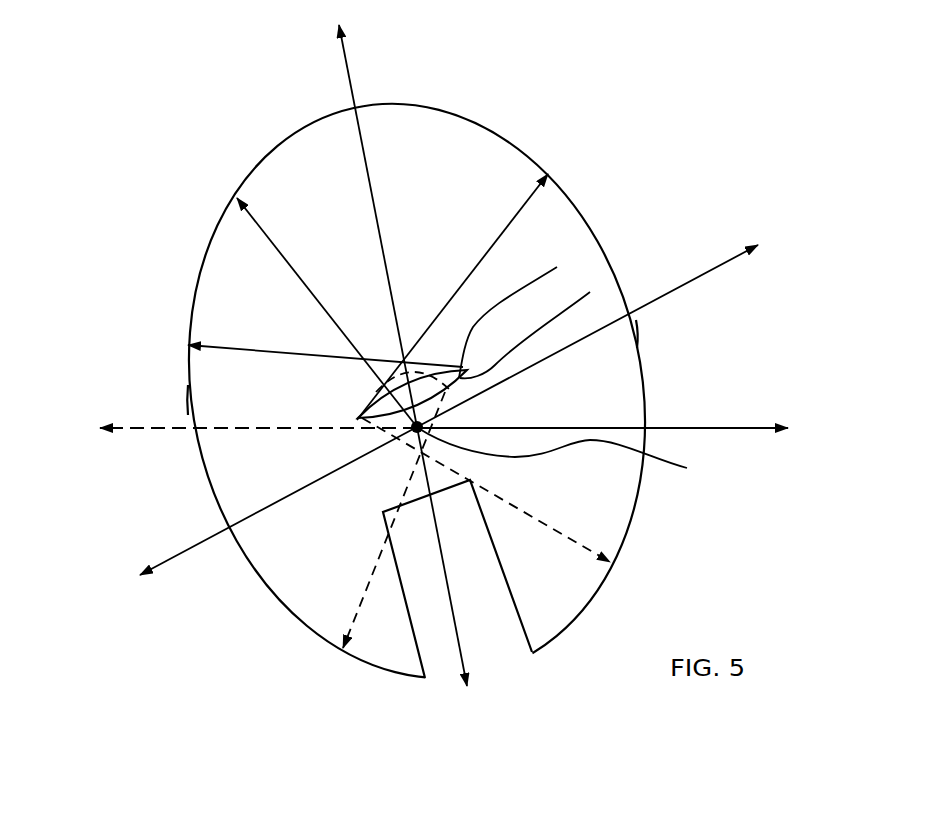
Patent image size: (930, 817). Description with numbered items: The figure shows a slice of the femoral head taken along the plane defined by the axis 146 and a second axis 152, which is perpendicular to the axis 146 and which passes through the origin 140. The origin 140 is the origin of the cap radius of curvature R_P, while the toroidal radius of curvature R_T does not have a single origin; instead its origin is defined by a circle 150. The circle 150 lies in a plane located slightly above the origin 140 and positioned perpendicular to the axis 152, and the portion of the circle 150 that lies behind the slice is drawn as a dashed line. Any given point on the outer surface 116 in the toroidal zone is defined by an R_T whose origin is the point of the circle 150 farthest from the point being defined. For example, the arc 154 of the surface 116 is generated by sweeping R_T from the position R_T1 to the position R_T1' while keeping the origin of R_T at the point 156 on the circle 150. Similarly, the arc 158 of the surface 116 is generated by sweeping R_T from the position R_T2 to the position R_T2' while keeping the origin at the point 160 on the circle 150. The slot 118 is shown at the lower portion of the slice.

The outer surface 116 is at (287, 137).
The slot 118 is at (424, 676).
The origin 140 is at (687, 468).
The axis 146 is at (468, 683).
The circle 150 is at (590, 292).
The axis 152 is at (747, 250).
The arc 154 is at (190, 398).
The point 156 is at (557, 267).
The arc 158 is at (633, 333).
The point 160 is at (358, 418).